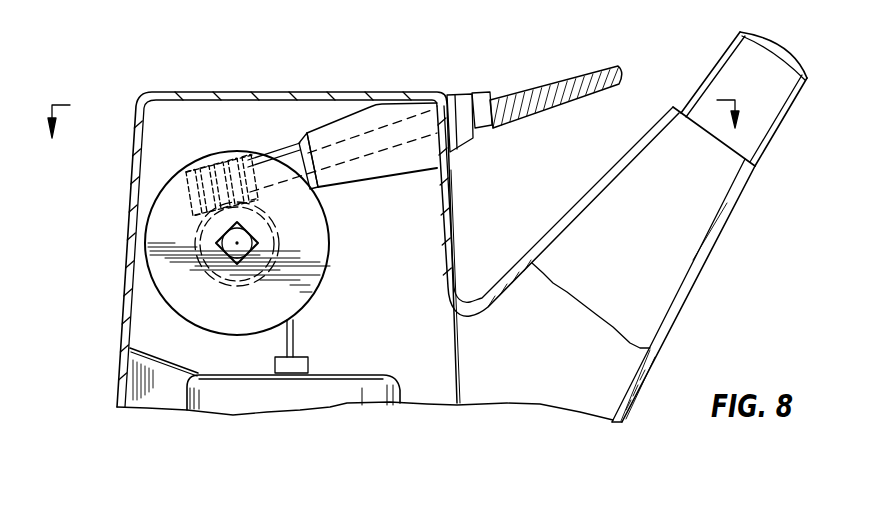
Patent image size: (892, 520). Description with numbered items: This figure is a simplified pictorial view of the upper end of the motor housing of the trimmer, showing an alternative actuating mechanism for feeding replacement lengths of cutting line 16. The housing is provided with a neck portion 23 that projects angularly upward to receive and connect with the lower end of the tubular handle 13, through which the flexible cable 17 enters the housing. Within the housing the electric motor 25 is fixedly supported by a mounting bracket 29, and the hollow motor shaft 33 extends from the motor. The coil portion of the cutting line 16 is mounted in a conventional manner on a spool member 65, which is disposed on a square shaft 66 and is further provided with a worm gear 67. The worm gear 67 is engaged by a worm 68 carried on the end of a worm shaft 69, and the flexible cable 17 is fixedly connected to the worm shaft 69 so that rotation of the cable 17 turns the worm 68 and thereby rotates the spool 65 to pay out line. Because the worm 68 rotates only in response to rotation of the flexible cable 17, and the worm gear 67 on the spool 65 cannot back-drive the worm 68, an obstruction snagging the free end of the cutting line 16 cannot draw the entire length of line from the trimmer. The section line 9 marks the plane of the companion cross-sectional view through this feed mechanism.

The section line 9- 9 is at (393, 119).
The tubular handle 13 is at (790, 108).
The cutting line 16 is at (297, 328).
The flexible cable 17 is at (577, 72).
The neck portion 23 is at (707, 260).
The electric motor 25 is at (401, 371).
The mounting bracket 29 is at (143, 385).
The motor shaft 33 is at (308, 365).
The spool member 65 is at (313, 272).
The square shaft 66 is at (257, 241).
The worm gear 67 is at (193, 240).
The worm 68 is at (210, 162).
The worm shaft 69 is at (387, 122).